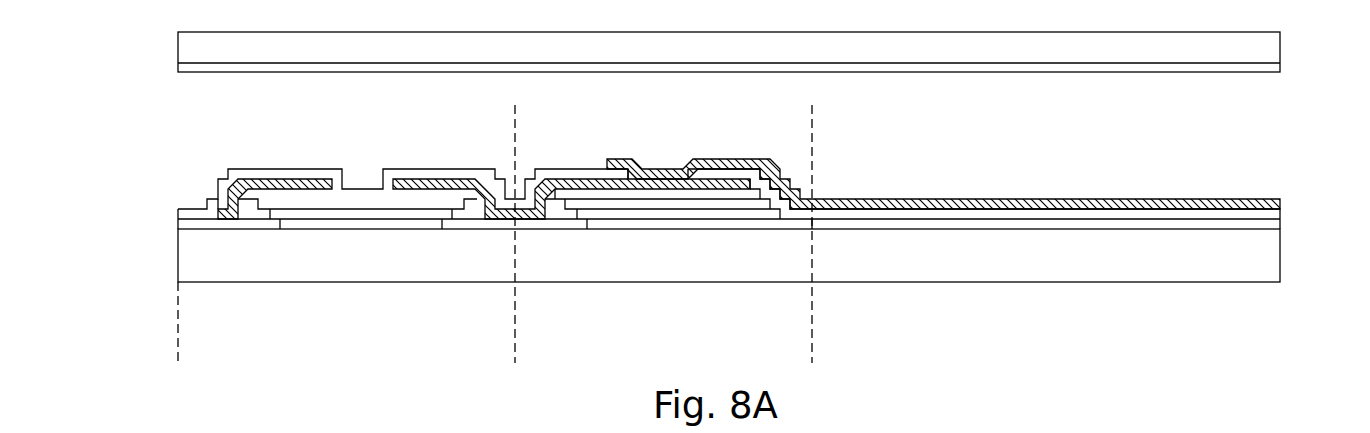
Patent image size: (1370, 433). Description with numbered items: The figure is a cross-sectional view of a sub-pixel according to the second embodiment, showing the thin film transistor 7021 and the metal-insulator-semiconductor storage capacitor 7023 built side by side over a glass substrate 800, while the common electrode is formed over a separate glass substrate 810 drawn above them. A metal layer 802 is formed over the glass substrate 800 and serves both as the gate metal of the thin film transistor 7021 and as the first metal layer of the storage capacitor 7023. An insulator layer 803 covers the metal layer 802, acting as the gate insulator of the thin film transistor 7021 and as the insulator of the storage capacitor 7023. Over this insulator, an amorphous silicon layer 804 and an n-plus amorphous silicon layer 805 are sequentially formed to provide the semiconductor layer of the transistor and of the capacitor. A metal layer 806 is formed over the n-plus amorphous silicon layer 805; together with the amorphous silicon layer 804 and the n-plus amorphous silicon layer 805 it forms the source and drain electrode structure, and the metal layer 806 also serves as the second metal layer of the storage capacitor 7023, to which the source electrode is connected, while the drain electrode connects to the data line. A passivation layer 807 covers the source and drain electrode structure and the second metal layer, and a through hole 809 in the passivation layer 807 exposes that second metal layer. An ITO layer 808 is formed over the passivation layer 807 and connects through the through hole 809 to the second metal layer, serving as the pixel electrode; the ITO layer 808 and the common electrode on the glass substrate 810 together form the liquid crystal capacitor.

The glass substrate 800 is at (1280, 252).
The metal layer 802 is at (415, 226).
The insulator layer 803 is at (1280, 223).
The amorphous silicon layer 804 is at (252, 216).
The n+ amorphous silicon layer 805 is at (727, 193).
The metal layer 806 is at (312, 181).
The passivation layer 807 is at (216, 181).
The ITO layer 808 is at (1280, 201).
The through hole 809 is at (658, 146).
The glass substrate 810 is at (1275, 47).
The thin film transistor 7021 is at (503, 348).
The metal-insulator-semiconductor storage capacitor 7023 is at (800, 348).